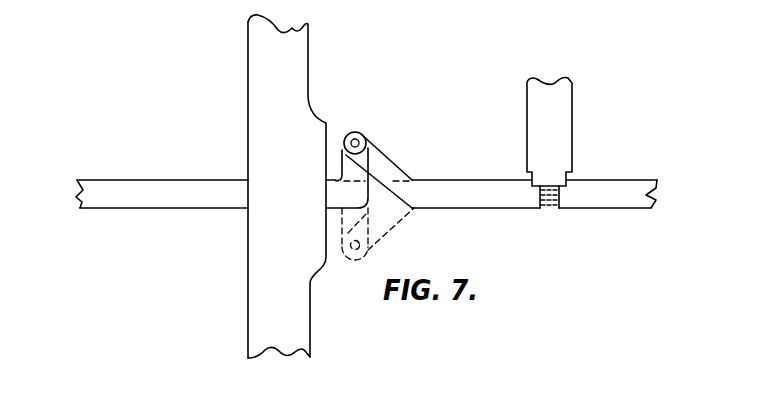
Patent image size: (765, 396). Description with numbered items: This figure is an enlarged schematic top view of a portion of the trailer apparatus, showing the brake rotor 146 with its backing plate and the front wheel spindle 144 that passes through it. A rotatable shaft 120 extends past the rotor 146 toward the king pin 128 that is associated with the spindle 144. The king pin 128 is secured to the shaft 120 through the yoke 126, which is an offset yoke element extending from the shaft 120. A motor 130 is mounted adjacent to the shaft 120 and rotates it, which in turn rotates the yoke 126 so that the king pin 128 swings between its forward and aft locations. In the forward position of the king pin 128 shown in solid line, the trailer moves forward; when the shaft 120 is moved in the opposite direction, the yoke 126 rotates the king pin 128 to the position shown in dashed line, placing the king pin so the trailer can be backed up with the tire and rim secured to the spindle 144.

The rotatable shaft 120 is at (606, 180).
The yoke 126 is at (398, 165).
The king pin 128 is at (356, 132).
The motor 130 is at (572, 122).
The front wheel spindle 144 is at (147, 180).
The brake rotor 146 is at (248, 66).